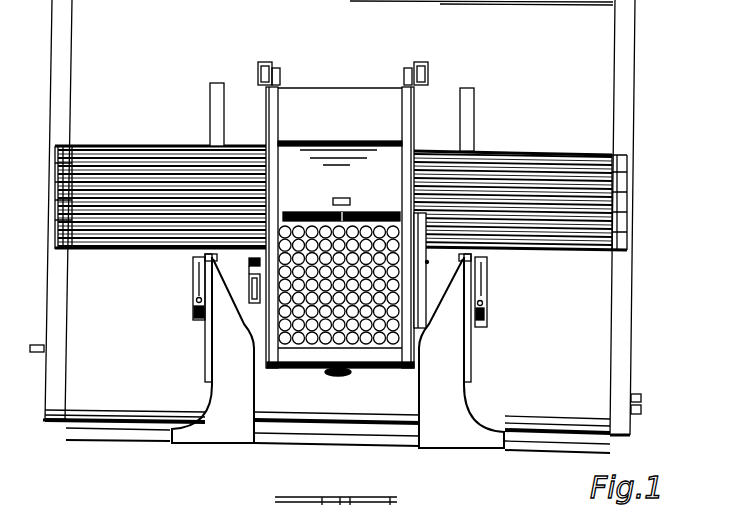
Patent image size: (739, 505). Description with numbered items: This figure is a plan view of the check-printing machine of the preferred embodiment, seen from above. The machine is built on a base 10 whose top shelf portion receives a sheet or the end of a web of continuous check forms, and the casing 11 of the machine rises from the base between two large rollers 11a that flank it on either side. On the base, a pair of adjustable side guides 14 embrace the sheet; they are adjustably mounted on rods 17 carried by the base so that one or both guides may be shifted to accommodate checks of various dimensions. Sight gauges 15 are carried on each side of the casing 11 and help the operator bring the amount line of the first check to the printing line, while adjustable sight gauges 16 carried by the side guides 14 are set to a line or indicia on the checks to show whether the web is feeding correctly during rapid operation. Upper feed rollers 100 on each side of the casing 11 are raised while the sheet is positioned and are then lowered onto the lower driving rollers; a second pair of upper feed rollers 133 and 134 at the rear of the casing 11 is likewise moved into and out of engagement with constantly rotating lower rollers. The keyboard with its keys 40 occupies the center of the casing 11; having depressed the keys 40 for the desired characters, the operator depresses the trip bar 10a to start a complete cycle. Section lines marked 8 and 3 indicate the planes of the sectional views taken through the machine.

The base 10 is at (335, 217).
The trip bar 10a is at (420, 322).
The casing 11 is at (340, 227).
The platen roller 11a is at (514, 157).
The side guides 14 is at (470, 378).
The sight gauges 15 is at (427, 272).
The adjustable sight gauges 16 is at (488, 276).
The rods 17 is at (146, 440).
The keys 40 is at (390, 497).
The upper feed rollers 100 is at (249, 304).
The upper rear feed roller 133 is at (266, 63).
The upper rear feed roller 134 is at (419, 64).
The section line 8- 8 is at (262, 504).
The section line 3- 3 is at (450, 478).